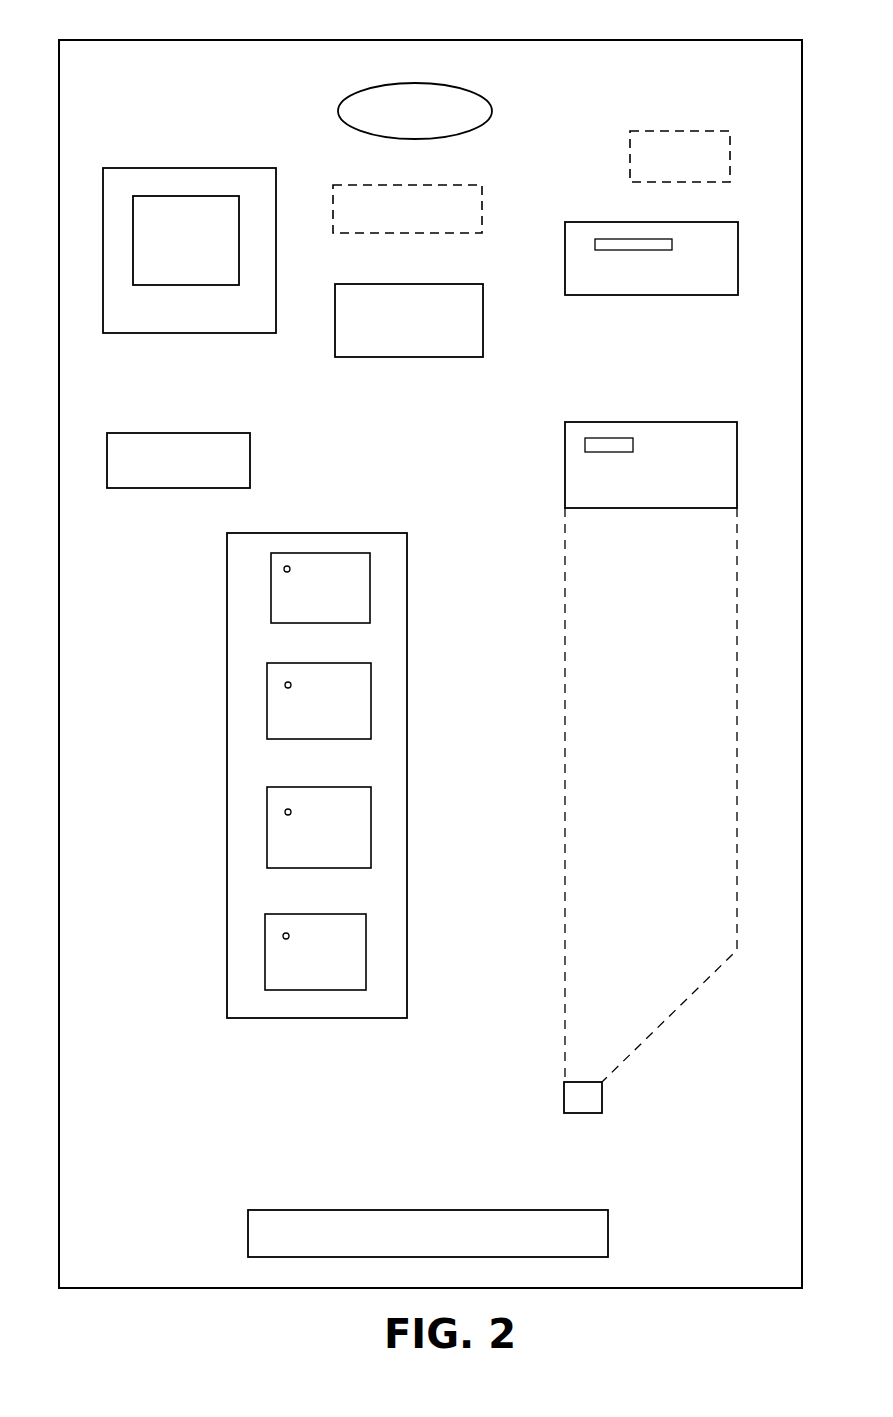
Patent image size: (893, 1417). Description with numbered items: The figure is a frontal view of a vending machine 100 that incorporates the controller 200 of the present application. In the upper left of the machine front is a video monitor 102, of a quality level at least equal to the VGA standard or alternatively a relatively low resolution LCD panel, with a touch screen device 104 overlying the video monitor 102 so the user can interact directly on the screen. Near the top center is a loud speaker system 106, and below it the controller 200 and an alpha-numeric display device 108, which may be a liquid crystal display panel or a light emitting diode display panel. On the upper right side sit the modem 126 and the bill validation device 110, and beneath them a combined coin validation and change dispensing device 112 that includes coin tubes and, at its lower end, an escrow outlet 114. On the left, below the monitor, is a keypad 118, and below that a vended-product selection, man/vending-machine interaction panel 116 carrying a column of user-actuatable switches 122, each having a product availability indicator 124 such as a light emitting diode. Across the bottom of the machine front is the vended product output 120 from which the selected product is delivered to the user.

The vending machine 100 is at (264, 42).
The video monitor 102 is at (201, 196).
The touch screen device 104 is at (137, 167).
The loud speaker system 106 is at (491, 104).
The alpha-numeric display device 108 is at (412, 358).
The bill validation device 110 is at (590, 221).
The combined coin validation and change dispensing device 112 is at (607, 421).
The escrow outlet 114 is at (603, 1101).
The vended-product selection, man/vending-machine interaction panel 116 is at (323, 532).
The keypad 118 is at (177, 432).
The vended product output 120 is at (370, 1209).
The user-actuatable switches 122 is at (271, 600).
The product availability indicator 124 is at (284, 568).
The modem 126 is at (668, 131).
The controller 200 is at (483, 204).